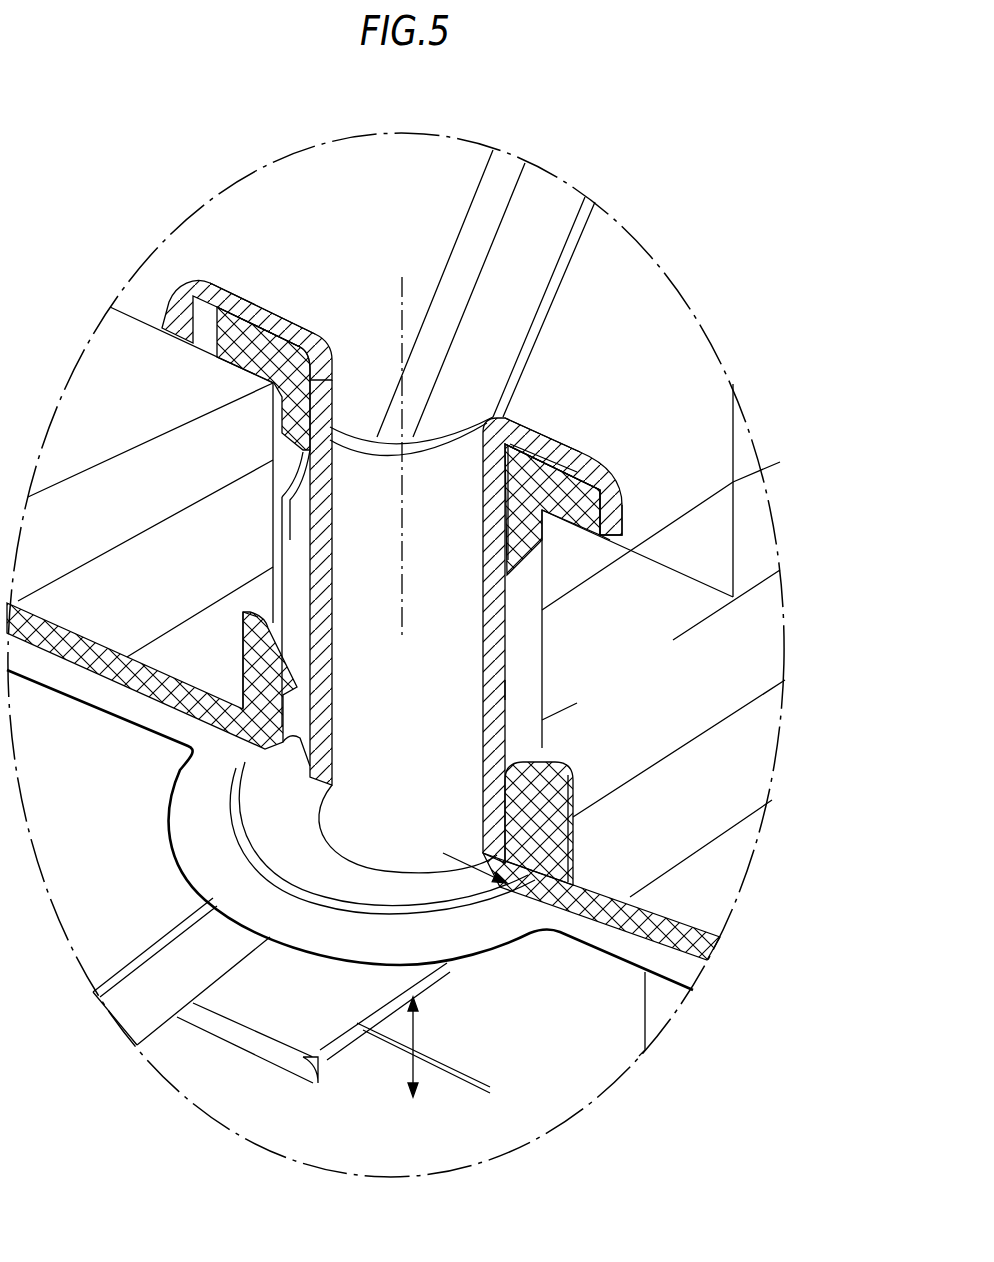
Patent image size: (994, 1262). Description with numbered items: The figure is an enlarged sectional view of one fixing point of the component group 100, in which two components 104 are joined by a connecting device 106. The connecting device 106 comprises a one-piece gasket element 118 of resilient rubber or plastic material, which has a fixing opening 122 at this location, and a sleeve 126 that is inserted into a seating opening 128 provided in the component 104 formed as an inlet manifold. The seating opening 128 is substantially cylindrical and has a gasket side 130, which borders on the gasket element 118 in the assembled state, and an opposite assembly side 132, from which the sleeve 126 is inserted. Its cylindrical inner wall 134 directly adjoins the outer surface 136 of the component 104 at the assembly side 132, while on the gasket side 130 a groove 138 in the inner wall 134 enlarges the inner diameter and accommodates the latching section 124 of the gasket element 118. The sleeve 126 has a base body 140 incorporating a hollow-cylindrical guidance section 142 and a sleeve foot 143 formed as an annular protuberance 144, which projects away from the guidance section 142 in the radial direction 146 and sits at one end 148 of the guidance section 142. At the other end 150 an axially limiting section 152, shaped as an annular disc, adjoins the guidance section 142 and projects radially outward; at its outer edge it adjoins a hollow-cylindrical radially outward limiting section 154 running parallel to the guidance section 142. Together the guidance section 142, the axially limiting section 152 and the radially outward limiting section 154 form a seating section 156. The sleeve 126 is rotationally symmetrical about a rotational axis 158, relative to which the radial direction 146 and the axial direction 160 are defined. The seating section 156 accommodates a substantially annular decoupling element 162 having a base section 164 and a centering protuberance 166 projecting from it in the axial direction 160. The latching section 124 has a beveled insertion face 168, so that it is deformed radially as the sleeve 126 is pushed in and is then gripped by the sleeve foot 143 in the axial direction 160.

The component group 100 is at (652, 243).
The component 104 is at (752, 752).
The connecting device 106 is at (668, 424).
The gasket element 118 is at (612, 902).
The fixing opening 122 is at (537, 900).
The latching section 124 is at (283, 677).
The sleeve 126 is at (500, 625).
The seating opening 128 is at (279, 542).
The gasket side 130 is at (333, 875).
The assembly side 132 is at (300, 283).
The inner wall 134 is at (542, 665).
The outer surface 136 is at (147, 318).
The groove 138 is at (245, 627).
The base body 140 is at (500, 693).
The guidance section 142 is at (500, 720).
The sleeve foot 143 is at (287, 748).
The annular protuberance 144 is at (243, 785).
The radial direction 146 is at (487, 866).
The end of the guidance section 148 is at (293, 845).
The other end of the guidance section 150 is at (256, 268).
The axially limiting section 152 is at (549, 440).
The radially outward limiting section 154 is at (613, 511).
The seating section 156 is at (599, 546).
The rotational axis 158 is at (402, 277).
The axial direction 160 is at (414, 1036).
The decoupling element 162 is at (567, 485).
The base section 164 is at (241, 335).
The centering protuberance 166 is at (273, 438).
The beveled insertion face 168 is at (530, 775).